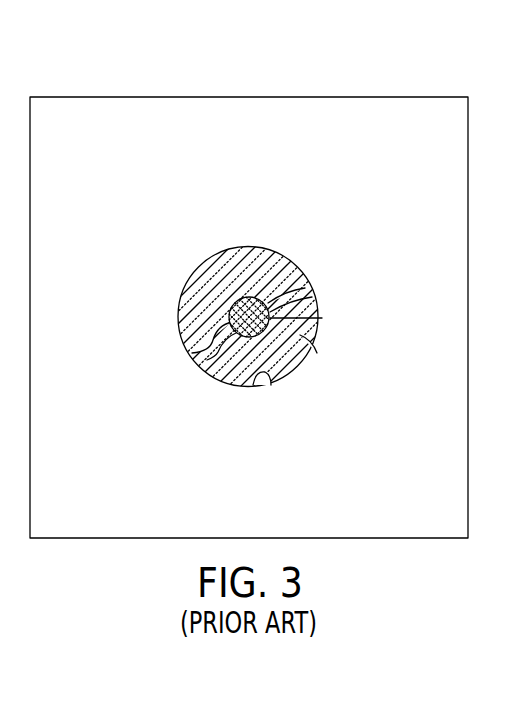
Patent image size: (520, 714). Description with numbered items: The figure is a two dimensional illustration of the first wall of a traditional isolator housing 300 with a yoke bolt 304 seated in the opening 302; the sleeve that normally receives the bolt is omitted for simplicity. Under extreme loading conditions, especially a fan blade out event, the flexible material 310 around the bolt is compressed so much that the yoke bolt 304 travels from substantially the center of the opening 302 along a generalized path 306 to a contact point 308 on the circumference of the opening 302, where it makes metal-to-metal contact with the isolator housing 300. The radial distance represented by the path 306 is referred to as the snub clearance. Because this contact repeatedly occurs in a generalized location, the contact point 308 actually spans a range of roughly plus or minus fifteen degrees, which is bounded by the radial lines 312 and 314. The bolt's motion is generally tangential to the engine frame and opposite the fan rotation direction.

The isolator housing 300 is at (70, 96).
The opening 302 is at (249, 247).
The yoke bolt 304 is at (191, 358).
The path 306 is at (272, 300).
The contact point 308 is at (322, 318).
The flexible material 310 is at (264, 383).
The radial line 312 is at (302, 287).
The radial line 314 is at (306, 352).